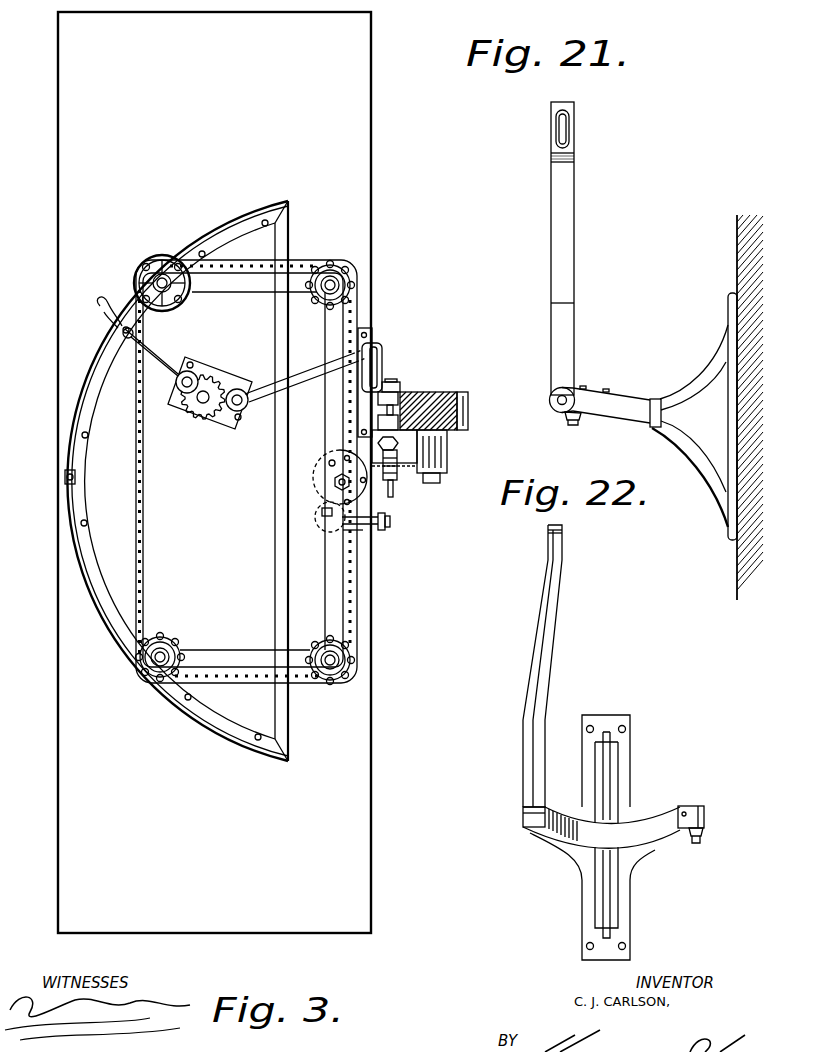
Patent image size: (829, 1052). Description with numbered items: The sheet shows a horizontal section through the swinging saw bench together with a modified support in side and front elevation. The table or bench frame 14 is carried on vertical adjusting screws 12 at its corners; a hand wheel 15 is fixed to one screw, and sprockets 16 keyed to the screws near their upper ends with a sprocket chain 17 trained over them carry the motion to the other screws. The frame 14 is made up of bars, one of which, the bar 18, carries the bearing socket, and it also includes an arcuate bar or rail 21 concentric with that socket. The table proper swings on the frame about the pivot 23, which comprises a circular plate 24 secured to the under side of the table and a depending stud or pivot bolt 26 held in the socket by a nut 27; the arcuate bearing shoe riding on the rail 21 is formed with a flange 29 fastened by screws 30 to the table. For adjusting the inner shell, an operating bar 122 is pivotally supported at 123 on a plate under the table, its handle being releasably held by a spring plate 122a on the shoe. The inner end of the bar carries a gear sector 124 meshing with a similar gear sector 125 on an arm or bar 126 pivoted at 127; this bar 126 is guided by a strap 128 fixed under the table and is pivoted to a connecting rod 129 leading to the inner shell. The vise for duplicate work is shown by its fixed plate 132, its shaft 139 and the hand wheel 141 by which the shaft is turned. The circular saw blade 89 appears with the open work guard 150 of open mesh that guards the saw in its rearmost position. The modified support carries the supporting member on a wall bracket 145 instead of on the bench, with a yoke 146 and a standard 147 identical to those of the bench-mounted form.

In FIG. 3, the vertical adjusting screw 12 is at (160, 268).
In FIG. 3, the table or bench frame 14 is at (245, 658).
In FIG. 3, the hand wheel 15 is at (185, 300).
In FIG. 3, the sprocket 16 is at (140, 293).
In FIG. 3, the sprocket chain 17 is at (144, 557).
In FIG. 3, the frame bar 18 is at (324, 578).
In FIG. 3, the arcuate bar or rail 21 is at (80, 550).
In FIG. 3, the pivot 23 is at (336, 483).
In FIG. 3, the circular plate 24 is at (338, 478).
In FIG. 3, the depending stud or pivot bolt 26 is at (328, 465).
In FIG. 3, the nut 27 is at (325, 505).
In FIG. 3, the flange 29 is at (78, 470).
In FIG. 3, the screws 30 is at (89, 436).
In FIG. 3, the circular saw blade 89 is at (404, 468).
In FIG. 3, the operating bar 122 is at (162, 362).
In FIG. 3, the spring plate 122a is at (108, 326).
In FIG. 3, the pivot of operating bar 123 is at (177, 406).
In FIG. 3, the gear sector 124 is at (208, 380).
In FIG. 3, the gear sector 125 is at (225, 422).
In FIG. 3, the arm or bar 126 is at (305, 381).
In FIG. 3, the pivot of arm 127 is at (243, 394).
In FIG. 3, the strap 128 is at (366, 343).
In FIG. 3, the connecting rod 129 is at (382, 367).
In FIG. 3, the fixed plate 132 is at (322, 522).
In FIG. 3, the shaft 139 is at (364, 534).
In FIG. 3, the hand wheel 141 is at (392, 521).
In FIG. 3, the open work guard 150 is at (446, 464).
In FIG. 21, the wall bracket 145 is at (683, 390).
In FIG. 22, the wall bracket 145 is at (610, 758).
In FIG. 21, the yoke 146 is at (615, 396).
In FIG. 22, the yoke 146 is at (652, 858).
In FIG. 21, the standard 147 is at (577, 274).
In FIG. 22, the standard 147 is at (552, 663).